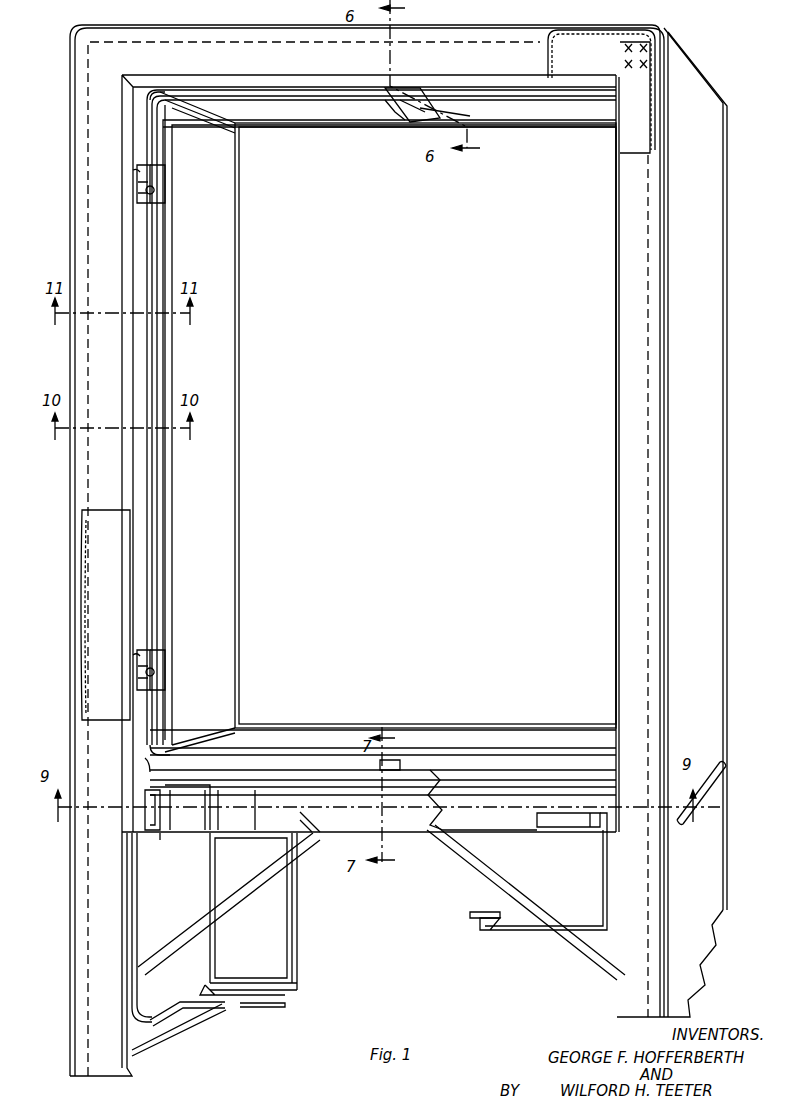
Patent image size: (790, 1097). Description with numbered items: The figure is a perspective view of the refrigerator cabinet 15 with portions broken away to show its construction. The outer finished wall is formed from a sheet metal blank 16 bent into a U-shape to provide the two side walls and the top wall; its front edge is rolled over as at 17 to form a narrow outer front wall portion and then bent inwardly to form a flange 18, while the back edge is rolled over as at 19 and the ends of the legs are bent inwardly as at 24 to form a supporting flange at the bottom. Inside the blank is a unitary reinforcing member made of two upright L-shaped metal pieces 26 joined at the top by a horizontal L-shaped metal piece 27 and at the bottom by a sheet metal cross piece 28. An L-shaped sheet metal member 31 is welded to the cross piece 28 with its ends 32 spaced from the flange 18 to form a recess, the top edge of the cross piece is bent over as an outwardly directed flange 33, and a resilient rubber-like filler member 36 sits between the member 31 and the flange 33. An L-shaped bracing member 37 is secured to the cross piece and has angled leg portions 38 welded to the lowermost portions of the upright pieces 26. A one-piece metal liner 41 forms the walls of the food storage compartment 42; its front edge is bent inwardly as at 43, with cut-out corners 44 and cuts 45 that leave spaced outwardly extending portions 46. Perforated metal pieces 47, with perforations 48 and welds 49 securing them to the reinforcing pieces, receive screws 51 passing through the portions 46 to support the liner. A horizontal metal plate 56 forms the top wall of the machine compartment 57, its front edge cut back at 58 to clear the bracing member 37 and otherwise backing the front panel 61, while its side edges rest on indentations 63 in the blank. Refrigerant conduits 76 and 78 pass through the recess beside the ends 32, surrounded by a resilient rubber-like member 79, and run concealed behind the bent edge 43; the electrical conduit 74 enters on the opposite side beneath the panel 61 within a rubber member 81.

The refrigerator cabinet 15 is at (150, 895).
The sheet metal blank 16 is at (700, 490).
The outer front wall portion 17 is at (635, 456).
The flange 18 is at (125, 340).
The rolled back edge 19 is at (275, 923).
The supporting flange 24 is at (245, 985).
The upright L-shaped metal pieces 26 is at (618, 135).
The horizontally extended L-shaped metal piece 27 is at (548, 62).
The sheet metal cross piece 28 is at (225, 812).
The L-shaped sheet metal member 31 is at (193, 797).
The ends of L-shaped member 32 is at (150, 835).
The outwardly directed flange 33 is at (260, 797).
The resilient filler member 36 is at (205, 795).
The bracing member 37 is at (405, 830).
The leg portions 38 is at (185, 952).
The metal liner 41 is at (190, 478).
The food storage compartment 42 is at (408, 340).
The inwardly bent edge 43 is at (160, 540).
The cut-out corner portions 44 is at (160, 124).
The cut portions 45 is at (165, 178).
The outwardly extending portions 46 is at (150, 200).
The metal pieces 47 is at (135, 170).
The perforations 48 is at (133, 185).
The welds 49 is at (130, 193).
The screw 51 is at (152, 190).
The metal plate 56 is at (215, 797).
The machine compartment 57 is at (160, 925).
The cut-back front edge 58 is at (308, 820).
The front panel 61 is at (495, 818).
The indentations 63 is at (715, 792).
The electrical conduit 74 is at (440, 108).
The conduit 76 is at (405, 112).
The conduit 78 is at (395, 105).
The resilient rubber-like member 79 is at (128, 818).
The rubber member 81 is at (605, 816).